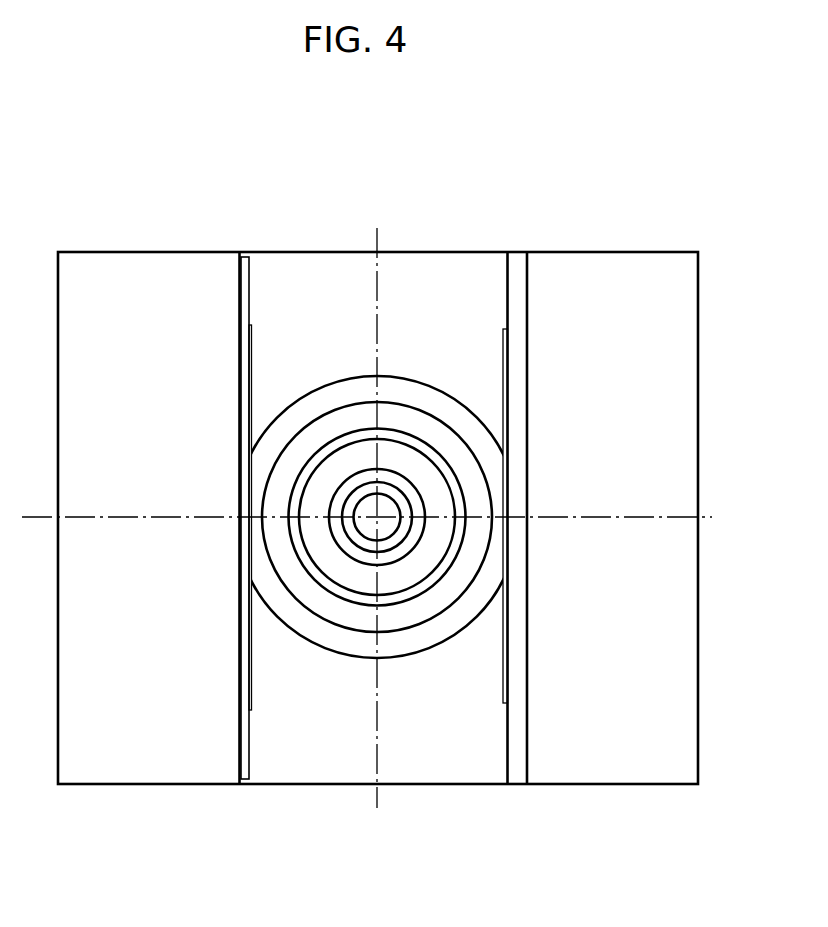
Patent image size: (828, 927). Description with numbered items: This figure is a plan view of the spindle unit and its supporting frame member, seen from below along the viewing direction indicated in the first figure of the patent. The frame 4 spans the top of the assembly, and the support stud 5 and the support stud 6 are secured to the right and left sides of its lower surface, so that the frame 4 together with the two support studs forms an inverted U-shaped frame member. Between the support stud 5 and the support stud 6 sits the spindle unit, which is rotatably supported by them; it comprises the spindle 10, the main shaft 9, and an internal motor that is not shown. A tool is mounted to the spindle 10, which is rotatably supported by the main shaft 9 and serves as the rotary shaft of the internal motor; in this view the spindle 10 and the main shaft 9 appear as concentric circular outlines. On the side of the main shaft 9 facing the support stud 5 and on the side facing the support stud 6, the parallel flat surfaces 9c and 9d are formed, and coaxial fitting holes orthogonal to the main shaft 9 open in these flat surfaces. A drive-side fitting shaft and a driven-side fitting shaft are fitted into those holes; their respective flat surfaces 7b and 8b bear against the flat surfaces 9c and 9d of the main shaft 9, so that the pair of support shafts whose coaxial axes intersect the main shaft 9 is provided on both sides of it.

The frame 4 is at (443, 270).
The support stud 5 is at (563, 277).
The support stud 6 is at (97, 277).
The main shaft 9 is at (338, 376).
The spindle 10 is at (347, 496).
The flat surface 9c is at (508, 528).
The flat surface 9d is at (247, 527).
The flat surface 8b is at (250, 547).
The flat surface 7b is at (503, 550).